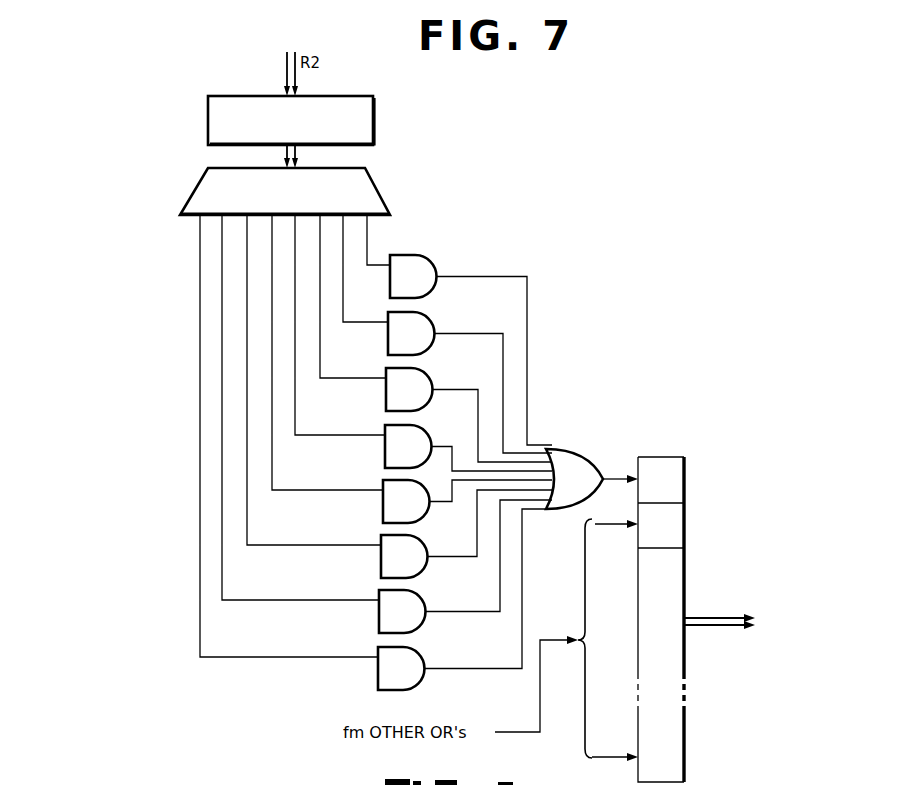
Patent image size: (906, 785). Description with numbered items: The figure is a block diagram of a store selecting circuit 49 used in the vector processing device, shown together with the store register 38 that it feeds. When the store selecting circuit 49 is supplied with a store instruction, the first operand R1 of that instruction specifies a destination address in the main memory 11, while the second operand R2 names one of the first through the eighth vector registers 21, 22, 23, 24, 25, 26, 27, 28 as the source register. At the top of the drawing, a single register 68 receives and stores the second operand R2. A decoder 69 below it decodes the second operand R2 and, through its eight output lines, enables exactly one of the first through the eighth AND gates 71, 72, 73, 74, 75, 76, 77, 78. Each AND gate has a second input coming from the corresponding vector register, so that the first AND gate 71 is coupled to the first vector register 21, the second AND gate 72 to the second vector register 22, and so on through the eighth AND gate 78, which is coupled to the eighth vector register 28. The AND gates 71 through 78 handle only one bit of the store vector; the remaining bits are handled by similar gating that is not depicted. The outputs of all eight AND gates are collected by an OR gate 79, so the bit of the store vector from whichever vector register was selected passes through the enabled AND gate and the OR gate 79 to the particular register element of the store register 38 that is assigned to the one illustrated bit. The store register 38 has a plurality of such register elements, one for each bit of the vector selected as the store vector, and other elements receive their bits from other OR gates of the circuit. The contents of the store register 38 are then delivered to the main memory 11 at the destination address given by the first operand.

The register 68 is at (374, 121).
The decoder 69 is at (389, 209).
The store selecting circuit 49 is at (606, 278).
The first AND gate 71 is at (437, 268).
The second AND gate 72 is at (434, 325).
The third AND gate 73 is at (432, 381).
The fourth AND gate 74 is at (430, 437).
The fifth AND gate 75 is at (428, 514).
The sixth AND gate 76 is at (426, 569).
The seventh AND gate 77 is at (424, 625).
The eighth AND gate 78 is at (423, 685).
The OR gate 79 is at (553, 465).
The store register 38 is at (698, 430).
The main memory 11 is at (746, 624).
The first vector register 21 is at (390, 287).
The second vector register 22 is at (388, 344).
The third vector register 23 is at (386, 400).
The fourth vector register 24 is at (385, 457).
The fifth vector register 25 is at (383, 512).
The sixth vector register 26 is at (381, 567).
The seventh vector register 27 is at (379, 622).
The eighth vector register 28 is at (378, 679).